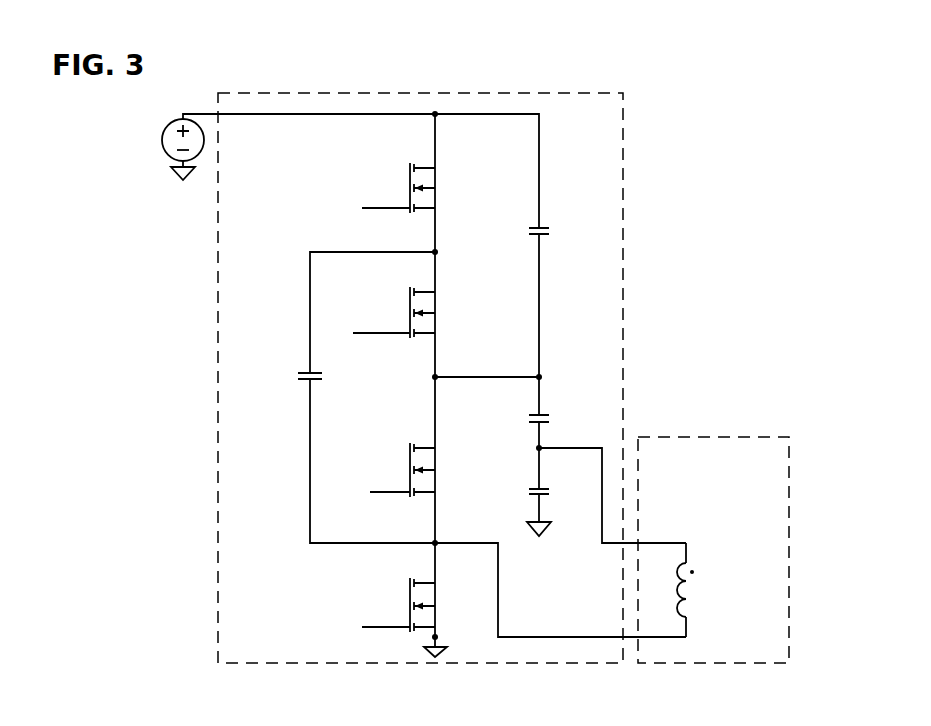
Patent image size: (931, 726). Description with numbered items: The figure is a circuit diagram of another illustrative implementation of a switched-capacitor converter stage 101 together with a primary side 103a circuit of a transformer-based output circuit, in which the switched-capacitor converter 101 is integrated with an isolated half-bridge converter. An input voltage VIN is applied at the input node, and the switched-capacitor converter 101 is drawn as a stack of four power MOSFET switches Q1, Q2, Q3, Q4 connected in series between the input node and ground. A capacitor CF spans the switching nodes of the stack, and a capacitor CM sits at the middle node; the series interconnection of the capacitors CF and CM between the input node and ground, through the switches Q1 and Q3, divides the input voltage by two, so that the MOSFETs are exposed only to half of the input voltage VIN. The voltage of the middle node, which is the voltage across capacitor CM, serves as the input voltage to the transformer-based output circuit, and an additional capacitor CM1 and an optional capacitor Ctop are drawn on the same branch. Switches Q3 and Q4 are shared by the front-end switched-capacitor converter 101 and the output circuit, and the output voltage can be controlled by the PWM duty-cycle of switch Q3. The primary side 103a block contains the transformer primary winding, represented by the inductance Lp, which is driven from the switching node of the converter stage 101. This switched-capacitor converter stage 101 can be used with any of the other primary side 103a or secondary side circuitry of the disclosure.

The switched-capacitor converter 101 is at (458, 664).
The primary side of the transformer-based output circuit 103a is at (735, 664).
The input voltage VIN is at (288, 146).
The switch Q1 is at (433, 188).
The switch Q2 is at (433, 312).
The switch Q3 is at (433, 470).
The switch Q4 is at (433, 605).
The capacitor CF is at (313, 367).
The capacitor CM is at (546, 410).
The second middle capacitor CM1 is at (549, 483).
The optional top capacitor Ctop is at (561, 231).
The primary winding inductor Lp is at (670, 590).